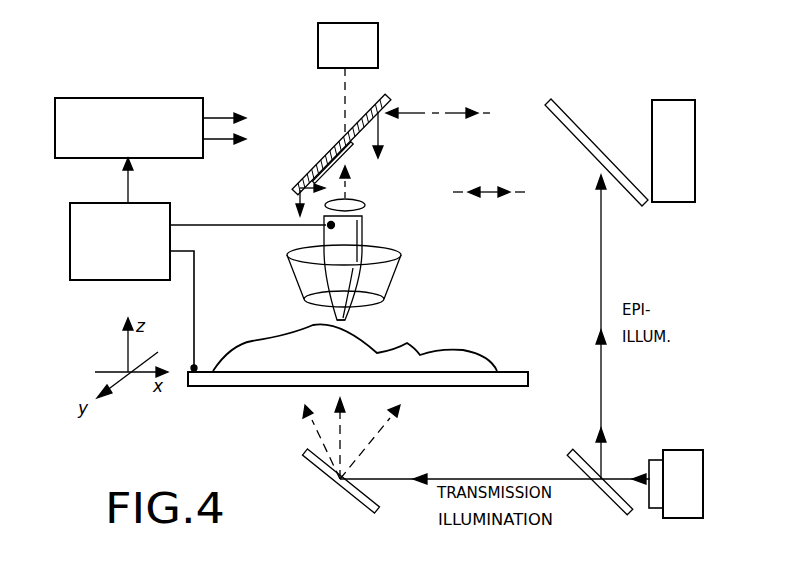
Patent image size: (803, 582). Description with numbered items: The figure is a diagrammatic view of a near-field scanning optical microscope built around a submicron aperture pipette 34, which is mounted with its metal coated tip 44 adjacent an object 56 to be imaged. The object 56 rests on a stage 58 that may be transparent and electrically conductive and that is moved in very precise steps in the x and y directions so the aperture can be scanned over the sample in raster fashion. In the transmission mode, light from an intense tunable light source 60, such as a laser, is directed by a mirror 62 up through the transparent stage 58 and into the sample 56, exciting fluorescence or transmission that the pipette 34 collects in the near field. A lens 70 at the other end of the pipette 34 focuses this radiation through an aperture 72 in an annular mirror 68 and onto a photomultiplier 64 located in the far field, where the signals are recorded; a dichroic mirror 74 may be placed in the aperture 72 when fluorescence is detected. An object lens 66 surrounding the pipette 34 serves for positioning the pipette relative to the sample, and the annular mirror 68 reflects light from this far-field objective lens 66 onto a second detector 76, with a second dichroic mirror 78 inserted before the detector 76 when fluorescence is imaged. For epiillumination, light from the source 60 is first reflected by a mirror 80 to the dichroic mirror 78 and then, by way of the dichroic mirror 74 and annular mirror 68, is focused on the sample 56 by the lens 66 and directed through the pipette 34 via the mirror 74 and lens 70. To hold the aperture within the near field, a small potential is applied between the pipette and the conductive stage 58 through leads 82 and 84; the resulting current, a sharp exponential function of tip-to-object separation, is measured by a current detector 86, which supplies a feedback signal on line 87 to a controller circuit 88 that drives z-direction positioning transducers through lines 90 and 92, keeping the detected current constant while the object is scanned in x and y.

The pipette 34 is at (365, 232).
The tip 44 is at (348, 316).
The object 56 is at (440, 340).
The stage 58 is at (501, 390).
The light source 60 is at (680, 493).
The mirror 62 is at (352, 498).
The photomultiplier 64 is at (378, 42).
The object lens 66 is at (395, 277).
The annular mirror 68 is at (312, 170).
The lens 70 is at (356, 200).
The aperture 72 is at (365, 128).
The dichroic mirror 74 is at (330, 134).
The second detector 76 is at (667, 188).
The second dichroic mirror 78 is at (574, 121).
The mirror 80 is at (612, 502).
The lead 82 is at (196, 316).
The lead 84 is at (196, 222).
The current detector 86 is at (82, 272).
The line 87 is at (127, 188).
The controller circuit 88 is at (100, 98).
The line 90 is at (220, 117).
The line 92 is at (210, 140).